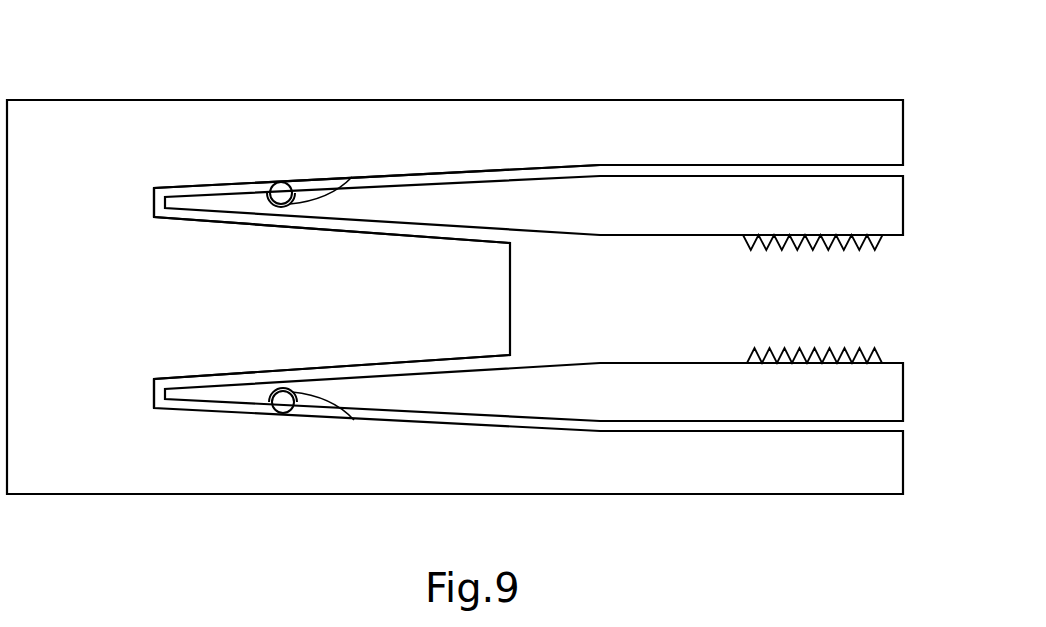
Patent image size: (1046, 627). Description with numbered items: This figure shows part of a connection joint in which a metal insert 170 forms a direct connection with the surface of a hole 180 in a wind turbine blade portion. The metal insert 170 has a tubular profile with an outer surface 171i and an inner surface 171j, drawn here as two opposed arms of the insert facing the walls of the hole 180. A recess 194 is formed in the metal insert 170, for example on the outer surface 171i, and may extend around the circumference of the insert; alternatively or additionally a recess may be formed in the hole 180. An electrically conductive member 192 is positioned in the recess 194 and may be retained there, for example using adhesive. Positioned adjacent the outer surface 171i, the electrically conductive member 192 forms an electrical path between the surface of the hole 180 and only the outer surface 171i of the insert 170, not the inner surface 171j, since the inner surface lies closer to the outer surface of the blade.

The metal insert 170 is at (662, 202).
The outer surface 171i is at (183, 193).
The inner surface 171j is at (222, 211).
The hole 180 is at (238, 180).
The electrically conductive member 192 is at (283, 182).
The recess 194 is at (296, 197).